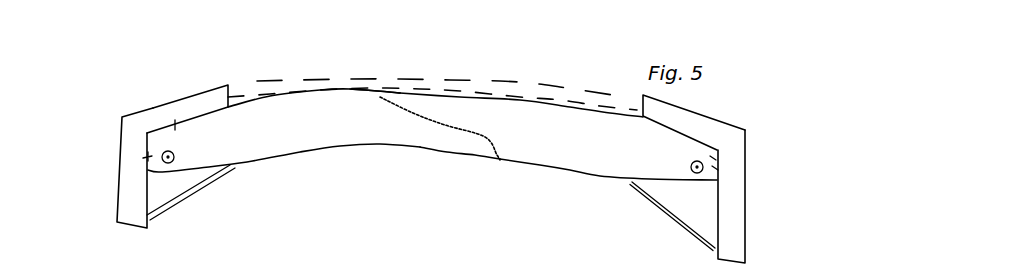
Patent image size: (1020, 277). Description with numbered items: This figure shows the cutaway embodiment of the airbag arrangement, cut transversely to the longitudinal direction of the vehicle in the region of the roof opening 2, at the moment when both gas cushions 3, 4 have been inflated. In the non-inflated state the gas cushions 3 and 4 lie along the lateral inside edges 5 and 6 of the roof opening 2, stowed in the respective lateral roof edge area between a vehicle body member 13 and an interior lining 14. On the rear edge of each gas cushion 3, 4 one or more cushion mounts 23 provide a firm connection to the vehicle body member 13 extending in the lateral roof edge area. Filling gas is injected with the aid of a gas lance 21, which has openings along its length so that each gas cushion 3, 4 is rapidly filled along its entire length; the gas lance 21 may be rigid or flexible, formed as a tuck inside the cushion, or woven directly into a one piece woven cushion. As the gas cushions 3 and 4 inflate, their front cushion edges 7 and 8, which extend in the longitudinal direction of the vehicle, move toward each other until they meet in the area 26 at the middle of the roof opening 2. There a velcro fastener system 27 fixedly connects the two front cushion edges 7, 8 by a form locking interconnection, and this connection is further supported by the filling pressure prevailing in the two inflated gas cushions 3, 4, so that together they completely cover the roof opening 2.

The roof opening 2 is at (501, 72).
The inflatable gas cushion 3 is at (256, 152).
The inflatable gas cushion 4 is at (576, 160).
The lateral inside edge 5 is at (234, 97).
The lateral inside edge 6 is at (640, 107).
The front cushion edge 7 is at (420, 132).
The front cushion edge 8 is at (438, 117).
The vehicle body member 13 is at (133, 120).
The interior lining 14 is at (182, 200).
The gas lance 21 is at (168, 150).
The cushion mount 23 is at (700, 143).
The area where the two front cushion edges meet 26 is at (438, 120).
The velcro fastener system 27 is at (412, 107).